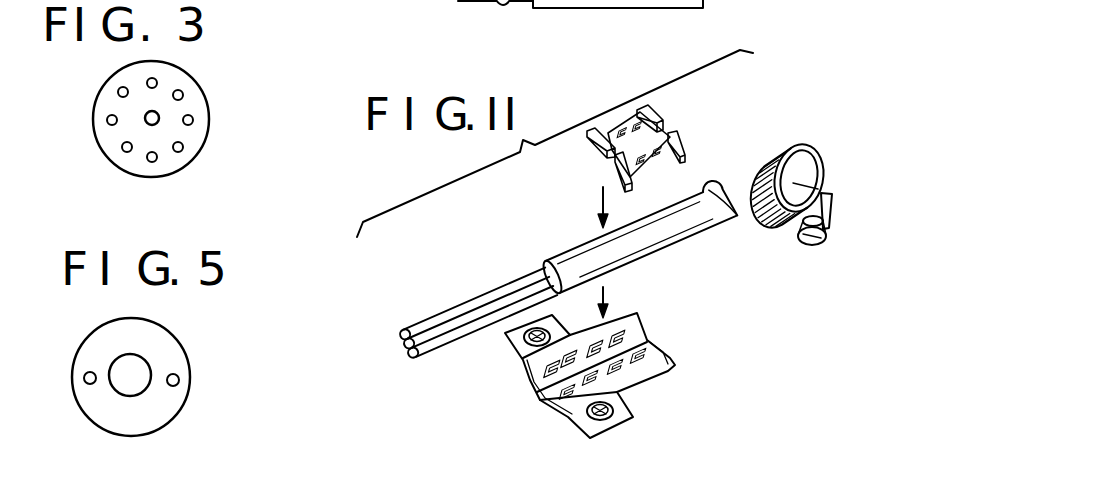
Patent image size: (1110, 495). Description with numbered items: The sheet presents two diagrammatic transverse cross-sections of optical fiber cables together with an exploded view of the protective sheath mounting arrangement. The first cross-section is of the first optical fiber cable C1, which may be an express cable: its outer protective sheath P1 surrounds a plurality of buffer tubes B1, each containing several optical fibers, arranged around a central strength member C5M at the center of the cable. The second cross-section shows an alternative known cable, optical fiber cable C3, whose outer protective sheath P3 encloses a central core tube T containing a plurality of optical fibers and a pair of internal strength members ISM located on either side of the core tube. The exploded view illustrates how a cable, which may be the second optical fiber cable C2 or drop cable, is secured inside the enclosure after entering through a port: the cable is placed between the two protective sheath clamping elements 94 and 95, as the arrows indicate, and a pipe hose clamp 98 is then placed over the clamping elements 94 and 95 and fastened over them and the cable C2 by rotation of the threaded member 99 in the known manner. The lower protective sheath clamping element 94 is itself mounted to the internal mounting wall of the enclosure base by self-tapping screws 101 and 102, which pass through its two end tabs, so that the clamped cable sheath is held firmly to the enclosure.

In FIG. 3, the first optical fiber cable C1 is at (109, 78).
In FIG. 3, the outer protective sheath P1 is at (195, 78).
In FIG. 3, the central strength member C5M is at (160, 118).
In FIG. 3, the buffer tubes B1 is at (118, 89).
In FIG. 5, the optical fiber cable C3 is at (89, 336).
In FIG. 5, the outer protective sheath P3 is at (186, 346).
In FIG. 5, the central core tube T is at (151, 372).
In FIG. 5, the internal strength members ISM is at (90, 384).
In FIG. 11, the protective sheath clamping element 95 is at (588, 135).
In FIG. 11, the second optical fiber cable C2 is at (687, 238).
In FIG. 11, the pipe hose clamp 98 is at (818, 167).
In FIG. 11, the threaded member 99 is at (808, 246).
In FIG. 11, the protective sheath clamping element 94 is at (646, 378).
In FIG. 11, the self-tapping screw 101 is at (523, 347).
In FIG. 11, the self-tapping screw 102 is at (573, 417).